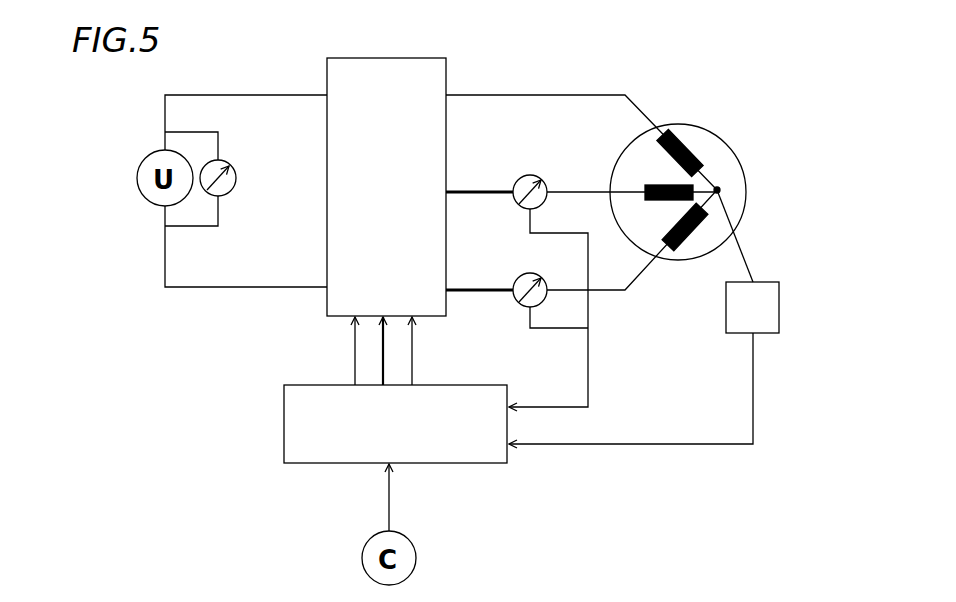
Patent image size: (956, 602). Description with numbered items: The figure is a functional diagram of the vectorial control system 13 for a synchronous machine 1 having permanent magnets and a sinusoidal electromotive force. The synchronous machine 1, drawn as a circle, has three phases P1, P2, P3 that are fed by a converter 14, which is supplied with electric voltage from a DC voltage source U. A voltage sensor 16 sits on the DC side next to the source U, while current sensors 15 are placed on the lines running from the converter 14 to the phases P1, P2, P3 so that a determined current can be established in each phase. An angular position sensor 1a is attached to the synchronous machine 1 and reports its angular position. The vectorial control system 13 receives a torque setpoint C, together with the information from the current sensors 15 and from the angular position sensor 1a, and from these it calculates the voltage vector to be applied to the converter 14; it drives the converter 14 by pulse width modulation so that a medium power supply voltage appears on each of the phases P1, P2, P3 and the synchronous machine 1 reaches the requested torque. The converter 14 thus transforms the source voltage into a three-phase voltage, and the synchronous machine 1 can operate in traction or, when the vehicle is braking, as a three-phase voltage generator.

The synchronous machine 1 is at (750, 126).
The angular position sensor 1a is at (752, 307).
The vectorial control system 13 is at (395, 424).
The converter 14 is at (386, 187).
The current sensors 15 is at (519, 208).
The voltage sensor 16 is at (236, 192).
The phase P1 is at (688, 132).
The phase P2 is at (660, 184).
The phase P3 is at (690, 245).